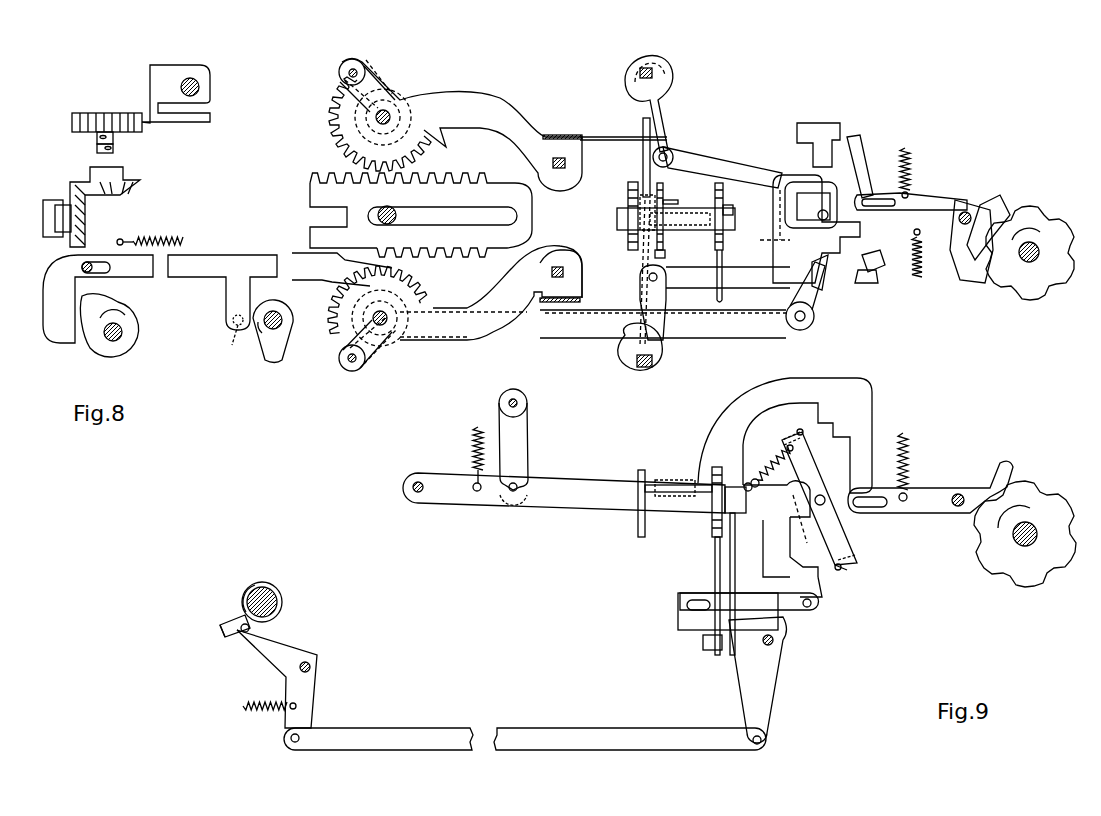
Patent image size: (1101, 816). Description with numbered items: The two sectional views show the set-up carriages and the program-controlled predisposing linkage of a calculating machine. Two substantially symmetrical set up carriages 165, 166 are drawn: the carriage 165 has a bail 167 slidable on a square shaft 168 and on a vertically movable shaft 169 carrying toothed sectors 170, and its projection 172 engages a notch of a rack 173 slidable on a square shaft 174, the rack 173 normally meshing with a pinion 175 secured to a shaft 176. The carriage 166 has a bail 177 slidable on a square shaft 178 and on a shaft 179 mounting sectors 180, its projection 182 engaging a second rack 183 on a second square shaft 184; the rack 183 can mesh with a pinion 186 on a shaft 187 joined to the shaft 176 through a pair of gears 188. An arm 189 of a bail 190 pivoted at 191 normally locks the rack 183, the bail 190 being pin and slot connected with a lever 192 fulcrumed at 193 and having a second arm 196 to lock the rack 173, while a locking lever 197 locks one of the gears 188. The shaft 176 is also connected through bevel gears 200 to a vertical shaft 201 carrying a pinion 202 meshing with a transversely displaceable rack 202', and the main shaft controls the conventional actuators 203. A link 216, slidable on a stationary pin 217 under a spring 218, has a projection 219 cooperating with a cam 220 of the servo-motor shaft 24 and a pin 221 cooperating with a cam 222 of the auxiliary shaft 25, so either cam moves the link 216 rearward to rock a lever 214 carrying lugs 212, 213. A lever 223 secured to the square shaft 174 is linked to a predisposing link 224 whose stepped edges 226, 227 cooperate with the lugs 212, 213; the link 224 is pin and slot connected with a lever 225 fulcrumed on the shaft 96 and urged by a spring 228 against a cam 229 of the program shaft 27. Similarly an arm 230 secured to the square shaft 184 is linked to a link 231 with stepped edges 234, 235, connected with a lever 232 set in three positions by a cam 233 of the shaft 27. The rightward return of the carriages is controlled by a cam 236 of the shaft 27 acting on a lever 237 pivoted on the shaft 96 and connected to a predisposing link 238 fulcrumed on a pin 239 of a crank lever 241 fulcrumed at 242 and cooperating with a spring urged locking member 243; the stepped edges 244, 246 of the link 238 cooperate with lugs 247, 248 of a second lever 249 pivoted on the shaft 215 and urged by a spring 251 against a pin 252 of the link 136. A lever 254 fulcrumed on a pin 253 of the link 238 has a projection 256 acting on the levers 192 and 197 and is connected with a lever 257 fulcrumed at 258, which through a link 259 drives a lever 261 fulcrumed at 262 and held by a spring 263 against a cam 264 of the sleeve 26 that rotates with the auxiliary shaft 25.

In FIG. 8, the servo-motor shaft 24 is at (122, 332).
In FIG. 8, the auxiliary shaft 25 is at (285, 325).
In FIG. 9, the auxiliary shaft 25 is at (265, 590).
In FIG. 9, the sleeve 26 is at (283, 598).
In FIG. 8, the program shaft 27 is at (1028, 262).
In FIG. 9, the program shaft 27 is at (1028, 548).
In FIG. 8, the shaft 96 is at (968, 212).
In FIG. 9, the shaft 96 is at (956, 494).
In FIG. 9, the link 136 is at (741, 514).
In FIG. 8, the set up carriage 165 is at (392, 358).
In FIG. 8, the set up carriage 166 is at (406, 86).
In FIG. 8, the bail 167 is at (578, 296).
In FIG. 8, the square shaft 168 is at (557, 266).
In FIG. 8, the shaft 169 is at (340, 296).
In FIG. 8, the toothed sectors 170 is at (412, 282).
In FIG. 8, the projection 172 is at (592, 302).
In FIG. 8, the rack 173 is at (638, 272).
In FIG. 8, the square shaft 174 is at (653, 360).
In FIG. 8, the pinion 175 is at (628, 190).
In FIG. 8, the shaft 176 is at (88, 220).
In FIG. 8, the bail 177 is at (560, 134).
In FIG. 8, the square shaft 178 is at (566, 164).
In FIG. 8, the shaft 179 is at (368, 118).
In FIG. 8, the sectors 180 is at (338, 138).
In FIG. 8, the projection 182 is at (612, 137).
In FIG. 8, the second rack 183 is at (643, 153).
In FIG. 8, the second square shaft 184 is at (653, 73).
In FIG. 8, the pinion 186 is at (662, 252).
In FIG. 8, the shaft 187 is at (722, 245).
In FIG. 8, the gears 188 is at (728, 210).
In FIG. 9, the gears 188 is at (712, 480).
In FIG. 8, the arm 189 is at (642, 190).
In FIG. 8, the bail 190 is at (661, 202).
In FIG. 9, the bail 190 is at (642, 470).
In FIG. 8, the pivot 191 is at (682, 228).
In FIG. 9, the pivot 191 is at (660, 500).
In FIG. 9, the lever 192 is at (735, 580).
In FIG. 9, the fulcrum 193 is at (708, 652).
In FIG. 8, the second arm 196 is at (660, 279).
In FIG. 9, the locking lever 197 is at (715, 563).
In FIG. 8, the bevel gear 200 is at (72, 190).
In FIG. 8, the vertical shaft 201 is at (110, 145).
In FIG. 8, the pinion 202 is at (104, 108).
In FIG. 8, the rack 202' is at (185, 106).
In FIG. 8, the actuators 203 is at (310, 206).
In FIG. 8, the lug 212 is at (806, 160).
In FIG. 8, the lug 213 is at (860, 285).
In FIG. 8, the lever 214 is at (862, 263).
In FIG. 9, the shaft 215 is at (820, 495).
In FIG. 8, the link 216 is at (280, 254).
In FIG. 8, the stationary pin 217 is at (93, 272).
In FIG. 8, the spring 218 is at (158, 240).
In FIG. 8, the projection 219 is at (72, 345).
In FIG. 8, the cam 220 is at (120, 352).
In FIG. 8, the pin 221 is at (233, 343).
In FIG. 8, the cam 222 is at (268, 360).
In FIG. 8, the lever 223 is at (667, 300).
In FIG. 8, the predisposing link 224 is at (755, 290).
In FIG. 8, the lever 225 is at (935, 195).
In FIG. 8, the stepped edge 226 is at (798, 133).
In FIG. 8, the stepped edge 227 is at (822, 292).
In FIG. 8, the spring 228 is at (910, 156).
In FIG. 8, the cam 229 is at (1028, 218).
In FIG. 8, the arm 230 is at (668, 103).
In FIG. 8, the link 231 is at (710, 165).
In FIG. 8, the lever 232 is at (962, 278).
In FIG. 8, the cam 233 is at (1050, 295).
In FIG. 8, the stepped edge 234 is at (866, 130).
In FIG. 8, the stepped edge 235 is at (815, 311).
In FIG. 9, the cam 236 is at (1010, 590).
In FIG. 9, the lever 237 is at (932, 513).
In FIG. 9, the predisposing link 238 is at (712, 447).
In FIG. 9, the pin 239 is at (520, 482).
In FIG. 9, the crank lever 241 is at (525, 441).
In FIG. 9, the fulcrum 242 is at (520, 404).
In FIG. 9, the locking member 243 is at (465, 500).
In FIG. 9, the stepped edge 244 is at (835, 415).
In FIG. 9, the stepped edge 246 is at (822, 590).
In FIG. 9, the lug 247 is at (798, 425).
In FIG. 9, the lug 248 is at (850, 570).
In FIG. 9, the second lever 249 is at (845, 536).
In FIG. 9, the spring 251 is at (766, 470).
In FIG. 9, the pin 252 is at (806, 544).
In FIG. 9, the pin 253 is at (812, 605).
In FIG. 9, the lever 254 is at (790, 612).
In FIG. 9, the projection 256 is at (700, 626).
In FIG. 9, the lever 257 is at (775, 700).
In FIG. 9, the fulcrum 258 is at (773, 643).
In FIG. 9, the link 259 is at (497, 728).
In FIG. 9, the lever 261 is at (312, 698).
In FIG. 9, the fulcrum 262 is at (312, 667).
In FIG. 9, the spring 263 is at (262, 700).
In FIG. 9, the cam 264 is at (222, 625).